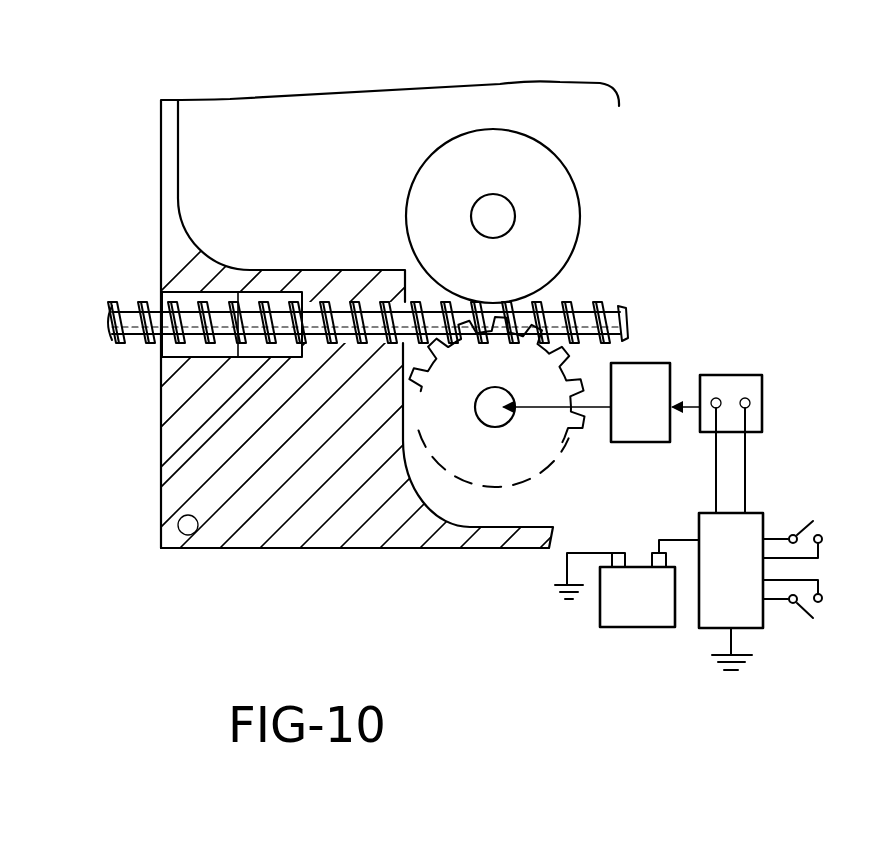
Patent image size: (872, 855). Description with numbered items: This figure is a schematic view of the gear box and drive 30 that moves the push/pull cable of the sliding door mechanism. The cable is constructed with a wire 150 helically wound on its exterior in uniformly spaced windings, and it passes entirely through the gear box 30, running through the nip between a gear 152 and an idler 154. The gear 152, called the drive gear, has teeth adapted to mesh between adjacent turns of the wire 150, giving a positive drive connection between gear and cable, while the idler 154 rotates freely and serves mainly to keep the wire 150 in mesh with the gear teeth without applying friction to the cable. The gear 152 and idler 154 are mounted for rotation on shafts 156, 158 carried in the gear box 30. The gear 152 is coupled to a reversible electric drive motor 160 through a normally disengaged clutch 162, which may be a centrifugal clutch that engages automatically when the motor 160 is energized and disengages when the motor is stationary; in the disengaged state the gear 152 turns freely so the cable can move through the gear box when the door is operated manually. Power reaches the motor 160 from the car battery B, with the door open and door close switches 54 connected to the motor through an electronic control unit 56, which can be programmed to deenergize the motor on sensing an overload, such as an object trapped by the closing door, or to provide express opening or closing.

The gear box 30 is at (390, 568).
The door open-door close switches 54 is at (855, 511).
The electronic control unit 56 is at (713, 618).
The wire 150 is at (237, 305).
The gear 152 is at (563, 428).
The idler 154 is at (475, 142).
The shaft 156 is at (490, 412).
The shaft 158 is at (502, 215).
The reversible electric drive motor 160 is at (738, 383).
The normally disengaged clutch 162 is at (652, 378).
The car battery B is at (622, 631).